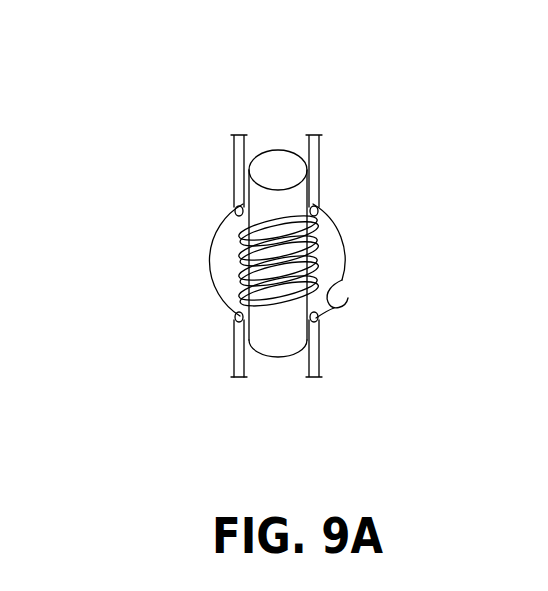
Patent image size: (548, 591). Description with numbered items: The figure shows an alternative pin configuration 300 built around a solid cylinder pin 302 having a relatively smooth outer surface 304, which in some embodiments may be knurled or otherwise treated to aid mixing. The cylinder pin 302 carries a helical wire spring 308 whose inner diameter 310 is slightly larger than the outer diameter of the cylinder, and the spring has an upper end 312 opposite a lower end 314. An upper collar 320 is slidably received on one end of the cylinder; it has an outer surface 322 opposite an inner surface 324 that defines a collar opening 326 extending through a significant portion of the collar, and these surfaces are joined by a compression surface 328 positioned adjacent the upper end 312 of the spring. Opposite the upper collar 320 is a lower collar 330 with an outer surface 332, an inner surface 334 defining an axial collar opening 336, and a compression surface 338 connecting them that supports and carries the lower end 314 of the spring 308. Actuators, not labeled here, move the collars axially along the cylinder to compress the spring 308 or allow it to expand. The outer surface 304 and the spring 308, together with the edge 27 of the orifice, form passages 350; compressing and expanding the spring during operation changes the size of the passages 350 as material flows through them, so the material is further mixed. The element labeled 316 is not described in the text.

The pin configuration 300 is at (335, 70).
The solid cylinder pin 302 is at (289, 148).
The outer surface 304 is at (287, 202).
The helical wire spring 308 is at (327, 243).
The inner diameter 310 is at (272, 212).
The upper end 312 is at (239, 212).
The lower end 314 is at (322, 316).
The spherical body 316 is at (240, 268).
The upper collar 320 is at (330, 153).
The outer surface 322 is at (312, 183).
The inner surface 324 is at (257, 143).
The collar opening 326 is at (275, 128).
The compression surface 328 is at (242, 207).
The lower collar 330 is at (330, 352).
The outer surface 332 is at (234, 360).
The inner surface 334 is at (247, 362).
The collar opening 336 is at (288, 363).
The compression surface 338 is at (237, 322).
The passages 350 is at (328, 270).
The edge 27 is at (334, 307).